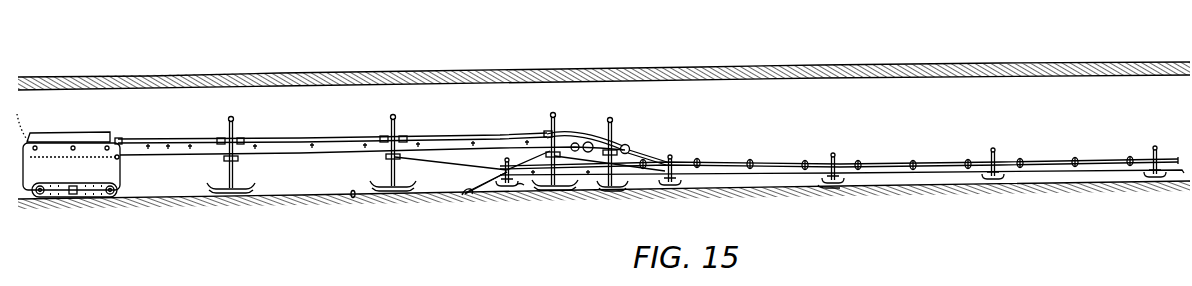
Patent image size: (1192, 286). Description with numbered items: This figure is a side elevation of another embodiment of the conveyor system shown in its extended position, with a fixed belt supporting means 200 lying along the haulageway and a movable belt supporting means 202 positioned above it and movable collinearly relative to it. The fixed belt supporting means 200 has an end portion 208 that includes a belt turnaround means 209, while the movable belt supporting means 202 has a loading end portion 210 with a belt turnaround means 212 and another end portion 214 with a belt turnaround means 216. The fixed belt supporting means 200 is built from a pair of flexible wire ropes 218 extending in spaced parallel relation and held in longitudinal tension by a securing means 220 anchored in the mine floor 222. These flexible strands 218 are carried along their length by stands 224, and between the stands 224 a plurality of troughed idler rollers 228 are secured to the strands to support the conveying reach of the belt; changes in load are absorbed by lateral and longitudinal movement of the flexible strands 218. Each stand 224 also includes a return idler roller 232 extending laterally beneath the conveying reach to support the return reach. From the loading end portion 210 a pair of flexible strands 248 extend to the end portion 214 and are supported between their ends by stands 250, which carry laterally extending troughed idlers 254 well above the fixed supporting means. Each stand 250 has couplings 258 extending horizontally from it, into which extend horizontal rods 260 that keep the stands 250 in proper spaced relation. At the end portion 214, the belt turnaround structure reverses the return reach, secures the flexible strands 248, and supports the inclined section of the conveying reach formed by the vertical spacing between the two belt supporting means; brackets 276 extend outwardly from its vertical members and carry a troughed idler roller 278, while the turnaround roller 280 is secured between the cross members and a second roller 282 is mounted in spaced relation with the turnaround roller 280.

The fixed belt supporting means 200 is at (964, 146).
The movable belt supporting means 202 is at (300, 119).
The end portion 208 is at (483, 188).
The belt turnaround means 209 is at (521, 187).
The loading end portion 210 is at (60, 132).
The belt turnaround means 212 is at (32, 126).
The end portion 214 is at (580, 114).
The belt turnaround means 216 is at (590, 133).
The flexible wire ropes 218 is at (658, 163).
The securing means 220 is at (468, 194).
The mine floor 222 is at (353, 197).
The stands 224 is at (512, 190).
The troughed idler rollers 228 is at (700, 163).
The return idler roller 232 is at (822, 186).
The flexible strands 248 is at (170, 139).
The stands 250 is at (233, 120).
The troughed idlers 254 is at (147, 139).
The couplings 258 is at (242, 139).
The horizontal rods 260 is at (345, 151).
The brackets 276 is at (634, 158).
The troughed idler roller 278 is at (627, 150).
The turnaround roller 280 is at (589, 153).
The second roller 282 is at (574, 152).